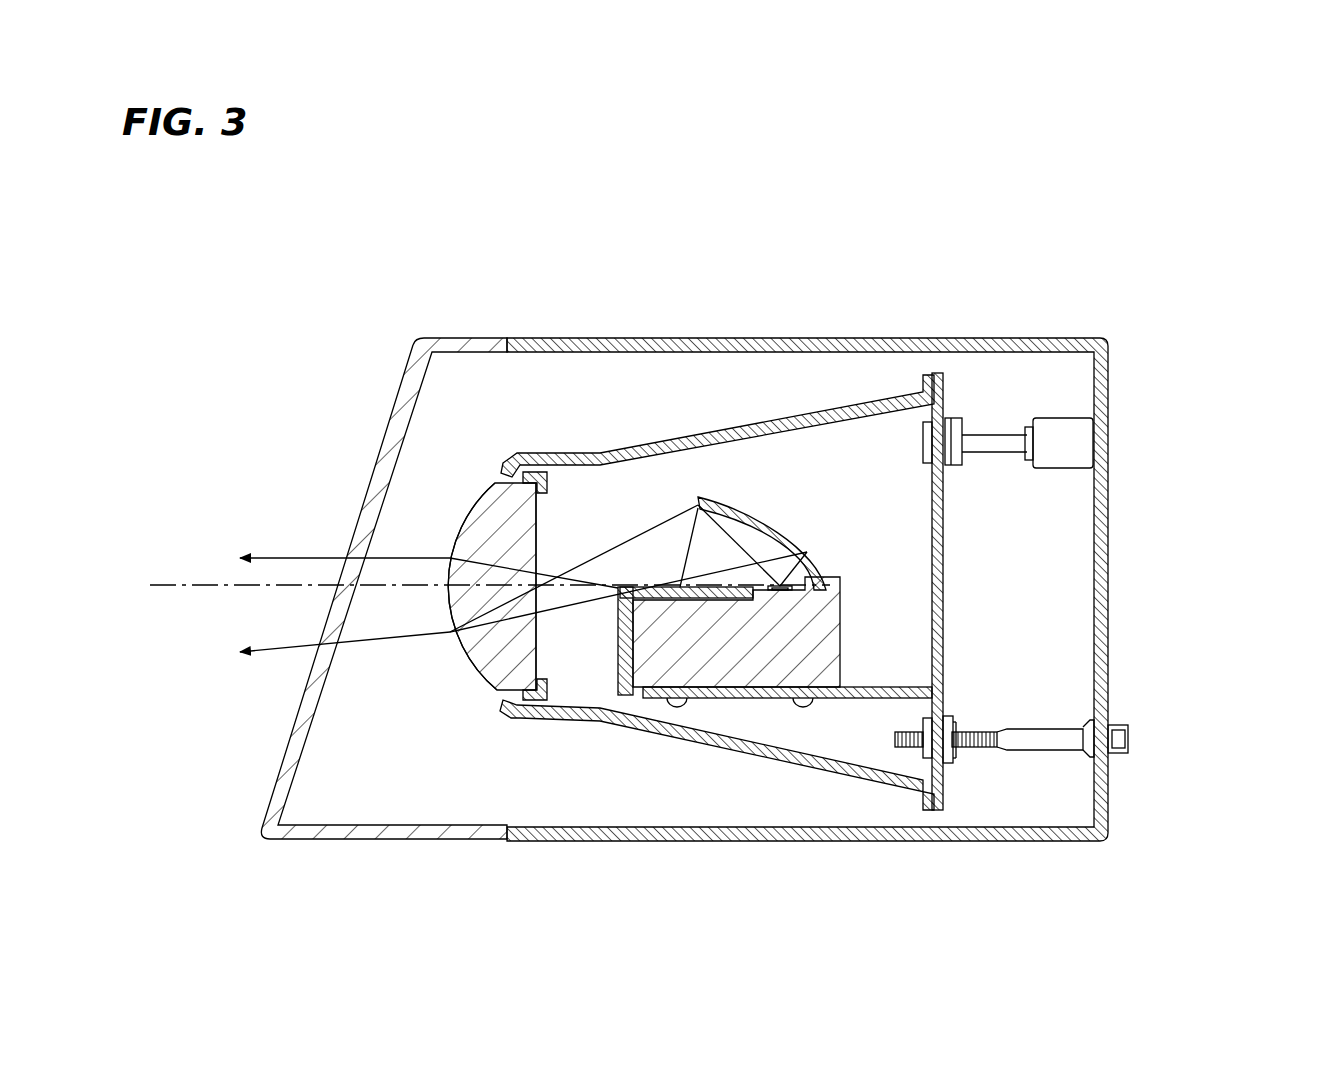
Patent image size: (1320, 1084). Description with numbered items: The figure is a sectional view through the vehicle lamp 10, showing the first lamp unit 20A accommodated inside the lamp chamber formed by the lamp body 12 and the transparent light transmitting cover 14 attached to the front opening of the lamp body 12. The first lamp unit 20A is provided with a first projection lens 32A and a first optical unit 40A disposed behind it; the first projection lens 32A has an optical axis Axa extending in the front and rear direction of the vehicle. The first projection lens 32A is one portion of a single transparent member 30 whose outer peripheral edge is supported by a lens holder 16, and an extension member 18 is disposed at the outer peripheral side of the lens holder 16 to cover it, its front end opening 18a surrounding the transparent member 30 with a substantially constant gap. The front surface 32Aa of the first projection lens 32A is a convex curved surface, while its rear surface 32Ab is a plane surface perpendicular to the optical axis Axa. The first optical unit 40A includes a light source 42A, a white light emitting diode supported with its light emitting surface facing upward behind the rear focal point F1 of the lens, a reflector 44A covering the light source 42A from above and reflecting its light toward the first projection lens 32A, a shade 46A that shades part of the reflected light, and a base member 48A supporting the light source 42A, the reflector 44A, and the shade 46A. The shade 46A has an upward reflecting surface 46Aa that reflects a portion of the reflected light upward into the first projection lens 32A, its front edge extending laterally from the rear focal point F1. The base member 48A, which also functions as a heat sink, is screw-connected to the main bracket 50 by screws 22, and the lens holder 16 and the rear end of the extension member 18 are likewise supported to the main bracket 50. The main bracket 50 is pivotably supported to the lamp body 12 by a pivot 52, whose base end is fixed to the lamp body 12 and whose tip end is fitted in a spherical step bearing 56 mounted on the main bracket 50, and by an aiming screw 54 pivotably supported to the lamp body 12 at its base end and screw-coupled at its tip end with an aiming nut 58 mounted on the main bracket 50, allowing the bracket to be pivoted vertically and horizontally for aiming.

The vehicle lamp 10 is at (430, 262).
The lamp body 12 is at (1113, 365).
The light transmitting cover 14 is at (397, 363).
The first lamp unit 20A is at (457, 437).
The optical axis Axa is at (218, 583).
The extension member 18 is at (553, 453).
The front end opening 18a is at (503, 695).
The lens holder 16 is at (553, 482).
The first projection lens 32A is at (453, 533).
The front surface of the first projection lens 32Aa is at (453, 632).
The rear surface of the first projection lens 32Ab is at (537, 617).
The transparent member 30 is at (430, 598).
The rear focal point F1 is at (617, 587).
The first optical unit 40A is at (789, 484).
The reflector 44A is at (777, 520).
The light source 42A is at (780, 583).
The base member 48A is at (795, 628).
The upward reflecting surface 46Aa is at (660, 587).
The shade 46A is at (617, 663).
The screws 22 is at (678, 703).
The main bracket 50 is at (947, 557).
The pivot 52 is at (1008, 443).
The spherical step bearing 56 is at (953, 460).
The aiming screw 54 is at (1011, 749).
The aiming nut 58 is at (957, 722).